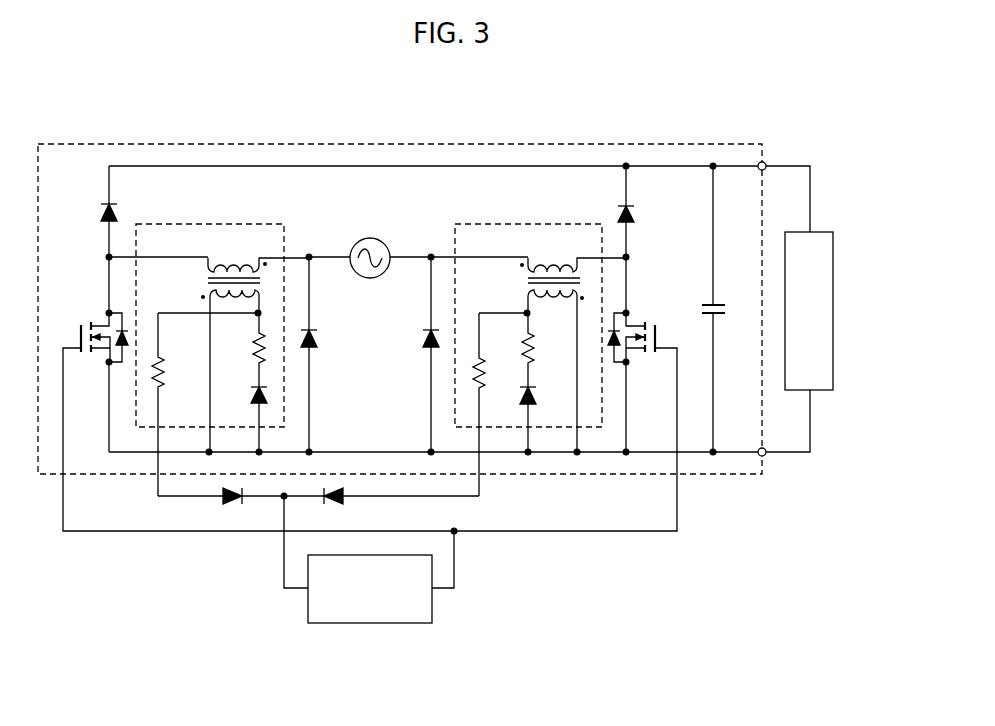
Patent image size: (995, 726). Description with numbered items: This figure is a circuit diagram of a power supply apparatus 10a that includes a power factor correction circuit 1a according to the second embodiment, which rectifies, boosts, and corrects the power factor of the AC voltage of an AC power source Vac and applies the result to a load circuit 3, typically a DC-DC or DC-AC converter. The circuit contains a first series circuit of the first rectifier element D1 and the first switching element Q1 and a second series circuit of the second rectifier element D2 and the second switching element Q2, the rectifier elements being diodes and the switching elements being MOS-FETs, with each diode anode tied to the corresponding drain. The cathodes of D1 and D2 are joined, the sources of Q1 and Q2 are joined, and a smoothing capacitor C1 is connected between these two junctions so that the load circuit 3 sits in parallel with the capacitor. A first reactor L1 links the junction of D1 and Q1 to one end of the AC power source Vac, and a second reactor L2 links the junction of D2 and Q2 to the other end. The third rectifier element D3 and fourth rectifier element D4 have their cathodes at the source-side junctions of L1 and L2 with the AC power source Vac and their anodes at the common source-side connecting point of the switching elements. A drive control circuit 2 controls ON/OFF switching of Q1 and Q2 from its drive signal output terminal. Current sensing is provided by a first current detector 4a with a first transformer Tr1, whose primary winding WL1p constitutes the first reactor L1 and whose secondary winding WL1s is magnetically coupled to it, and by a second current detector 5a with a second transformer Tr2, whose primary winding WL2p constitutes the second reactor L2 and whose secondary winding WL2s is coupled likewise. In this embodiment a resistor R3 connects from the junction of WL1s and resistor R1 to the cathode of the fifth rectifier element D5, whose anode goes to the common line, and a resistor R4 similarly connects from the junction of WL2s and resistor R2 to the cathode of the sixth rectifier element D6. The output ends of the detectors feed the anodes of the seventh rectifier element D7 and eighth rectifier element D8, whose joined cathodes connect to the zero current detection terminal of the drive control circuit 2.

The power supply apparatus 10a is at (82, 110).
The power factor correction circuit 1a is at (223, 144).
The drive control circuit 2 is at (368, 623).
The load circuit 3 is at (833, 258).
The first current detector 4a is at (505, 427).
The second current detector 5a is at (183, 427).
The first rectifier element D1 is at (639, 211).
The second rectifier element D2 is at (121, 211).
The third rectifier element D3 is at (418, 354).
The fourth rectifier element D4 is at (321, 354).
The fifth rectifier element D5 is at (541, 419).
The sixth rectifier element D6 is at (245, 419).
The seventh rectifier element D7 is at (381, 509).
The eighth rectifier element D8 is at (221, 509).
The first switching element Q1 is at (634, 354).
The second switching element Q2 is at (101, 354).
The resistor R1 is at (492, 404).
The resistor R2 is at (172, 404).
The resistor R3 is at (543, 350).
The resistor R4 is at (243, 350).
The smoothing capacitor C1 is at (727, 309).
The first reactor L1 is at (577, 232).
The second reactor L2 is at (258, 232).
The first transformer Tr1 is at (542, 252).
The second transformer Tr2 is at (226, 252).
The primary winding WL1p is at (563, 258).
The secondary winding WL1s is at (530, 300).
The primary winding WL2p is at (243, 258).
The secondary winding WL2s is at (203, 297).
The AC power source Vac is at (370, 270).